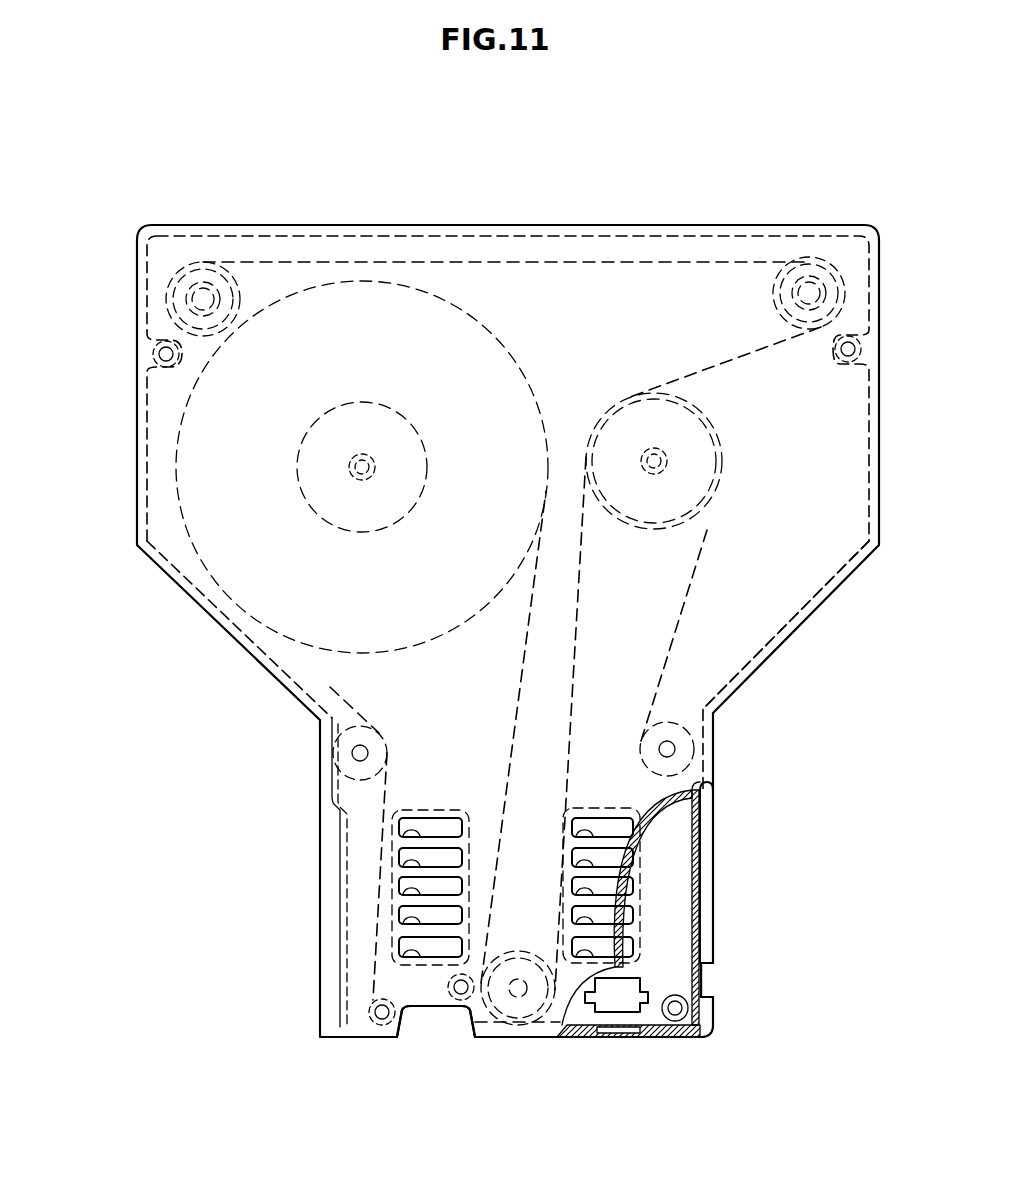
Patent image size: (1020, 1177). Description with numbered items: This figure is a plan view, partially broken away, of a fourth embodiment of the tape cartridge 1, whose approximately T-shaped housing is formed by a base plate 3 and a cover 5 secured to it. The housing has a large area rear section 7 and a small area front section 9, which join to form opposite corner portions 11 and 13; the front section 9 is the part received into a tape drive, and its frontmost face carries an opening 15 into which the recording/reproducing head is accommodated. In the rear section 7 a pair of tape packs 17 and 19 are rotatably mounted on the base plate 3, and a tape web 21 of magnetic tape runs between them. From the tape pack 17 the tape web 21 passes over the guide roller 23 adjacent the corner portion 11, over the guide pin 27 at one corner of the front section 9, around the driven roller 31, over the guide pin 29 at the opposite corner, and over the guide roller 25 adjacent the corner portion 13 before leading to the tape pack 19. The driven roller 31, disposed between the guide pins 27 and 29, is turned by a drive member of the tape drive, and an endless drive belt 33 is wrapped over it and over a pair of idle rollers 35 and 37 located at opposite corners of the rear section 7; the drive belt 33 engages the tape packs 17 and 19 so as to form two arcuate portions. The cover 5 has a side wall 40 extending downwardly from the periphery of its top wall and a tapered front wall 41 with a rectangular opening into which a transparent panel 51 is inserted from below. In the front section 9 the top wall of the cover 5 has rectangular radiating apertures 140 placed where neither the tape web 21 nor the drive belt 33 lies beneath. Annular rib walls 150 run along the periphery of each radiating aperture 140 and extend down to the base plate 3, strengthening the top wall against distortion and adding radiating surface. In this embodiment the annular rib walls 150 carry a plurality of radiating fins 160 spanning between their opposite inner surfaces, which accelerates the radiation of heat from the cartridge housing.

The tape cartridge 1 is at (526, 218).
The base plate 3 is at (700, 830).
The cover 5 is at (705, 790).
The rear section 7 is at (137, 432).
The front section 9 is at (318, 858).
The corner portion 11 is at (713, 713).
The corner portion 13 is at (318, 720).
The opening 15 is at (472, 1038).
The tape pack 17 is at (652, 405).
The tape pack 19 is at (362, 403).
The tape web 21 is at (335, 688).
The guide roller 23 is at (667, 749).
The guide roller 25 is at (368, 752).
The guide pin 27 is at (690, 1008).
The guide pin 29 is at (382, 1026).
The driven roller 31 is at (518, 1025).
The drive belt 33 is at (600, 250).
The idle roller 35 is at (812, 262).
The idle roller 37 is at (203, 285).
The side wall 40 is at (645, 980).
The front wall 41 is at (681, 1038).
The transparent panel 51 is at (622, 1038).
The radiating aperture 140 is at (600, 822).
The annular rib wall 150 is at (430, 808).
The radiating fin 160 is at (405, 920).